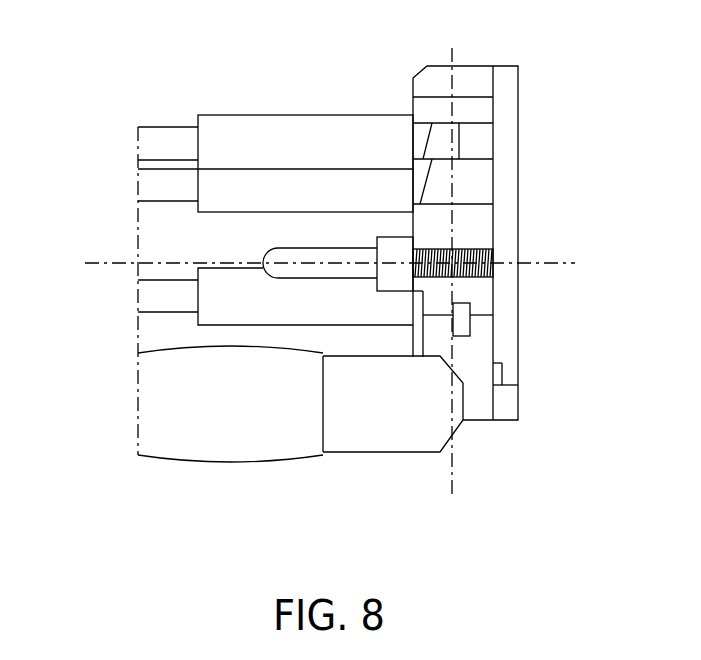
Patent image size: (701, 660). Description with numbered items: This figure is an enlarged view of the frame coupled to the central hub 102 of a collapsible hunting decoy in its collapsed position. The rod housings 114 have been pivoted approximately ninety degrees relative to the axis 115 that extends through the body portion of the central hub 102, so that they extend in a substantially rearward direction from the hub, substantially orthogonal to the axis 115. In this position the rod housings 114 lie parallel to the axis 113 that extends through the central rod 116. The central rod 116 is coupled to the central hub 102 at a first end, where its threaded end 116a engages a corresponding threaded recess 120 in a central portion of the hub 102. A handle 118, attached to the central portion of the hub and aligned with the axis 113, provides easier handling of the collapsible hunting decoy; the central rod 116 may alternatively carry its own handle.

The central hub 102 is at (520, 107).
The axis 113 is at (308, 291).
The rod housings 114 is at (298, 114).
The axis 115 is at (454, 257).
The central rod 116 is at (306, 248).
The threaded end 116a is at (463, 248).
The handle 118 is at (192, 403).
The threaded recess 120 is at (455, 278).